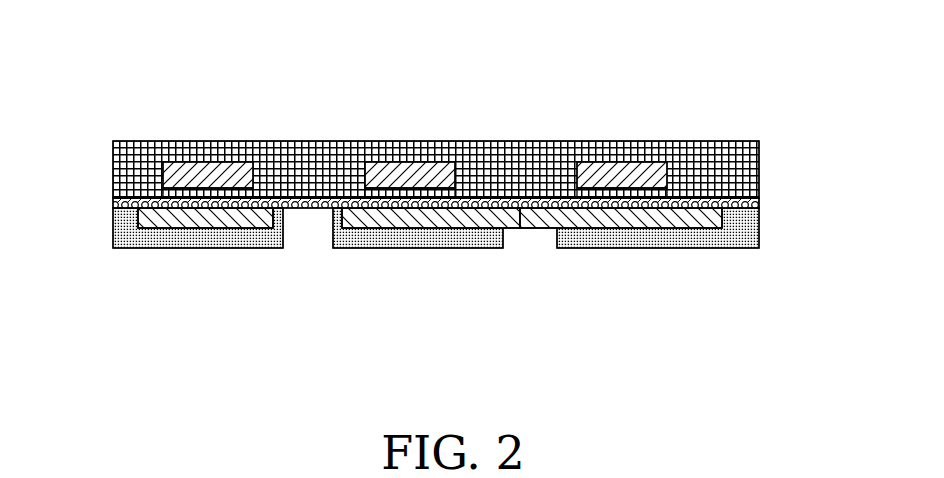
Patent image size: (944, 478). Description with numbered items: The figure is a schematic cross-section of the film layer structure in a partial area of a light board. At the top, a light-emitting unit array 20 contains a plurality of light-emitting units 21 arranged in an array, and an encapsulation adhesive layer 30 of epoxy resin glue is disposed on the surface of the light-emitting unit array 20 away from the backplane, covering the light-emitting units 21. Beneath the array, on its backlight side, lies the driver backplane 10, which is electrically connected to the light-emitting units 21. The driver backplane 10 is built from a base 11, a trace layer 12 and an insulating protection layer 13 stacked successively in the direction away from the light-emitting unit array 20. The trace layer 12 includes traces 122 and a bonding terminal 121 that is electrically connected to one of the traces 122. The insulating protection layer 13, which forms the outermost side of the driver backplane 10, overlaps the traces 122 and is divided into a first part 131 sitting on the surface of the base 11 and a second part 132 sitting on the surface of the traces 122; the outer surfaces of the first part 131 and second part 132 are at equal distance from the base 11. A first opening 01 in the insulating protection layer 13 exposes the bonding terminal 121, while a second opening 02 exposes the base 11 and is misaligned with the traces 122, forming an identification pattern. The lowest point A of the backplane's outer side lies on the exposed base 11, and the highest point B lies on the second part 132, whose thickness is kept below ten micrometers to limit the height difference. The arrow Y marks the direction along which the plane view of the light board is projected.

The driver backplane 10 is at (433, 274).
The base 11 is at (603, 204).
The trace layer 12 is at (532, 265).
The bonding terminal 121 is at (522, 229).
The trace 122 is at (480, 214).
The insulating protection layer 13 is at (433, 265).
The first part 131 is at (128, 240).
The second part 132 is at (175, 230).
The light-emitting unit array 20 is at (213, 85).
The light-emitting unit 21 is at (211, 172).
The encapsulation adhesive layer 30 is at (703, 165).
The first opening 01 is at (534, 243).
The second opening 02 is at (319, 233).
The lowest point A is at (290, 249).
The highest point B is at (210, 249).
The Y direction Y is at (799, 283).